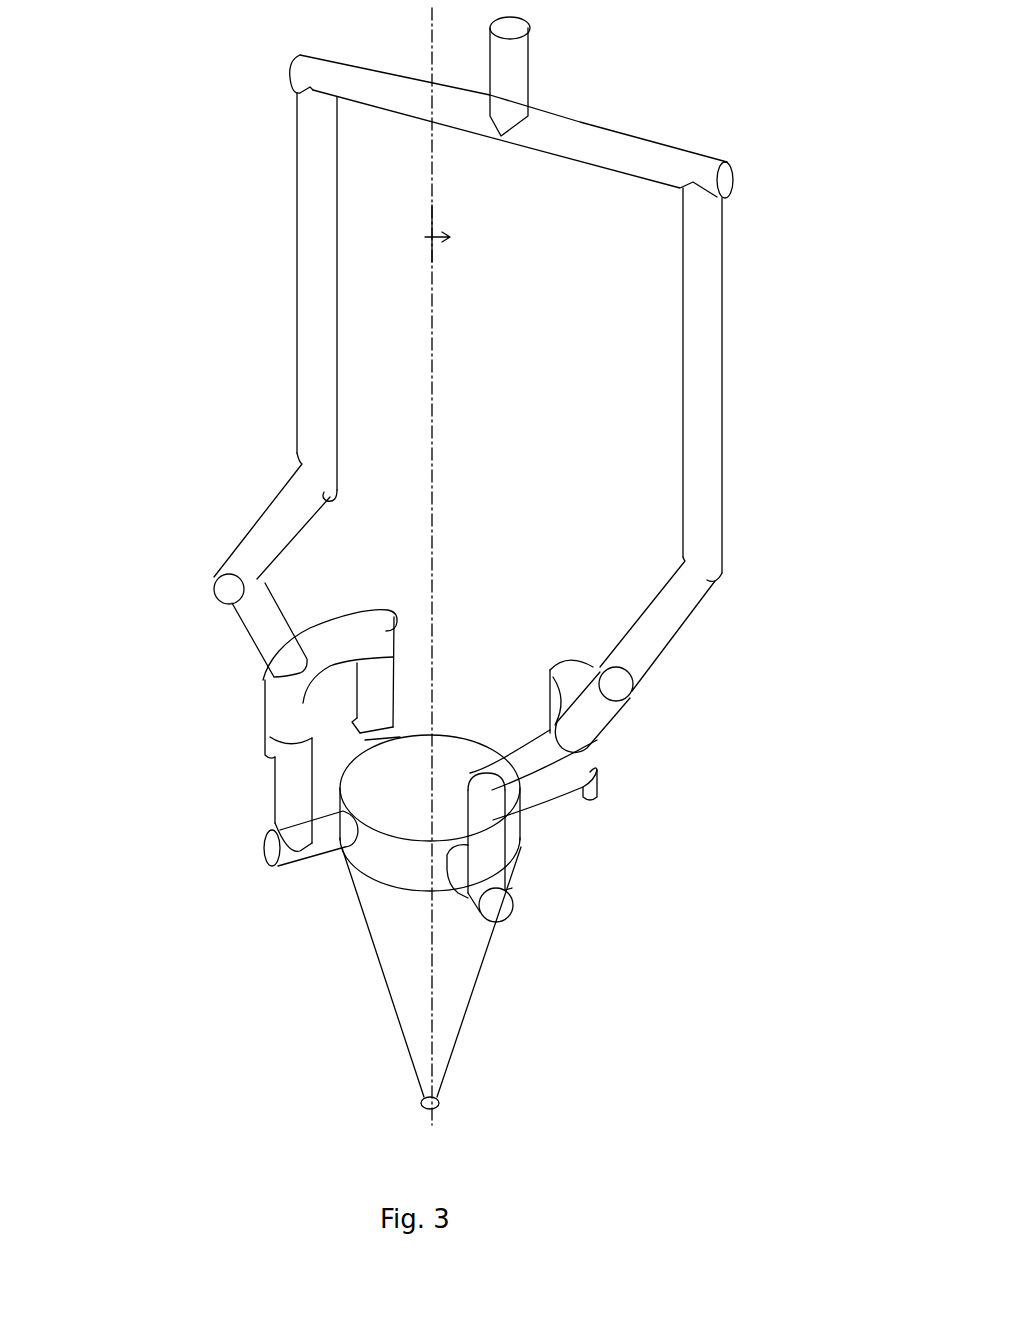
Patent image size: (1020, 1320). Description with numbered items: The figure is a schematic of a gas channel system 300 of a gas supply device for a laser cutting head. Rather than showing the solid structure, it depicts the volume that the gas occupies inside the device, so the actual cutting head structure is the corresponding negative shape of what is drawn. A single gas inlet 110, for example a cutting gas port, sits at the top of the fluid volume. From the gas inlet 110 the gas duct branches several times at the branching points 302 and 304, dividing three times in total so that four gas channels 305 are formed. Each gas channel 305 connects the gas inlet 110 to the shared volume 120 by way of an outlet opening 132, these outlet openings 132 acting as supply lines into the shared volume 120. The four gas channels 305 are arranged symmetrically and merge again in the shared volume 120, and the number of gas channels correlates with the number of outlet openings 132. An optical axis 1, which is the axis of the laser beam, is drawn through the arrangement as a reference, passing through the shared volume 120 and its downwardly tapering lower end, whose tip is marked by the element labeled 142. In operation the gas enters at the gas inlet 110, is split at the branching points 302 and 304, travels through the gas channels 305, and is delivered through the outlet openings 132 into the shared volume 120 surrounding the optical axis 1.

The gas channel system 300 is at (145, 36).
The optical axis 1 is at (437, 537).
The gas inlet 110 is at (525, 62).
The branching point 302 is at (503, 143).
The branching point 304 is at (263, 670).
The gas channel 305 is at (293, 812).
The outlet opening 132 is at (345, 855).
The shared volume 120 is at (478, 950).
The tip end 142 is at (438, 1103).